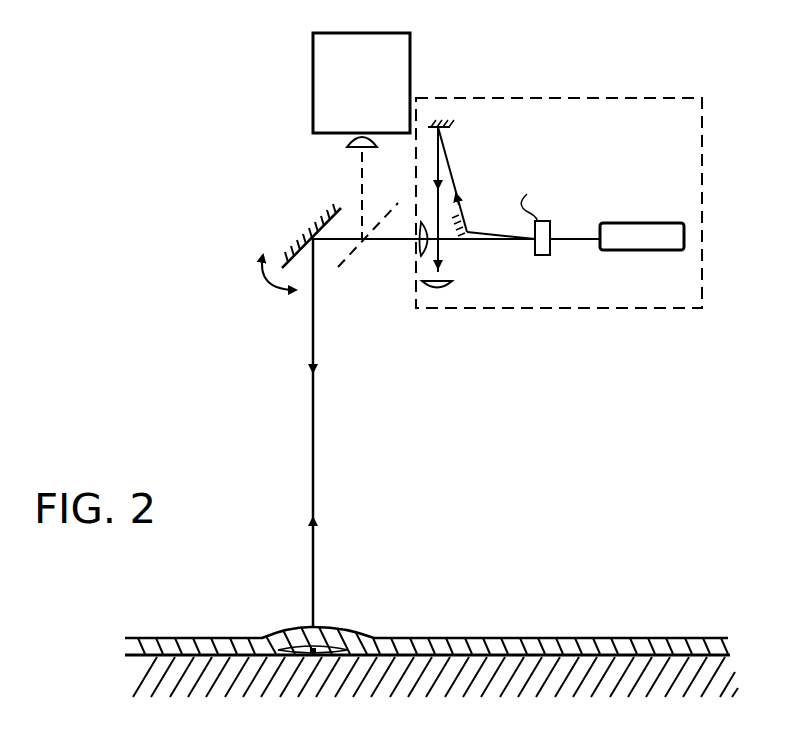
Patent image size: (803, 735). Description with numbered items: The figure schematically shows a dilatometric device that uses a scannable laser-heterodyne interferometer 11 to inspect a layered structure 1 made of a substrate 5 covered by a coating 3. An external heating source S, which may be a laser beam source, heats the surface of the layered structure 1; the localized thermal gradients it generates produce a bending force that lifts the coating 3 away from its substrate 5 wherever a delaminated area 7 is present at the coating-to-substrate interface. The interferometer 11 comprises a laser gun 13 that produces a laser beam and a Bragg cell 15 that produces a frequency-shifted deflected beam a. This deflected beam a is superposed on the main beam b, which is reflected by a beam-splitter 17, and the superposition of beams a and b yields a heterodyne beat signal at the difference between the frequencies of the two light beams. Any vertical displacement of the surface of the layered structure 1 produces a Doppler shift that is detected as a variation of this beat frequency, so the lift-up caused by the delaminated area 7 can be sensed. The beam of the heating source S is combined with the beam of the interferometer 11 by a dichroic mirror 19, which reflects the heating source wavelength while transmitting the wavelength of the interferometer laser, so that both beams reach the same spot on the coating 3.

The layered structure 1 is at (460, 631).
The coating 3 is at (400, 637).
The substrate 5 is at (534, 672).
The delaminated area 7 is at (320, 646).
The laser-heterodyne interferometer 11 is at (590, 95).
The laser gun 13 is at (633, 251).
The Bragg cell 15 is at (539, 257).
The beam-splitter 17 is at (447, 245).
The dichroic mirror 19 is at (353, 248).
The source S is at (410, 55).
The frequency-shifted deflected beam a is at (452, 156).
The main beam b is at (342, 232).